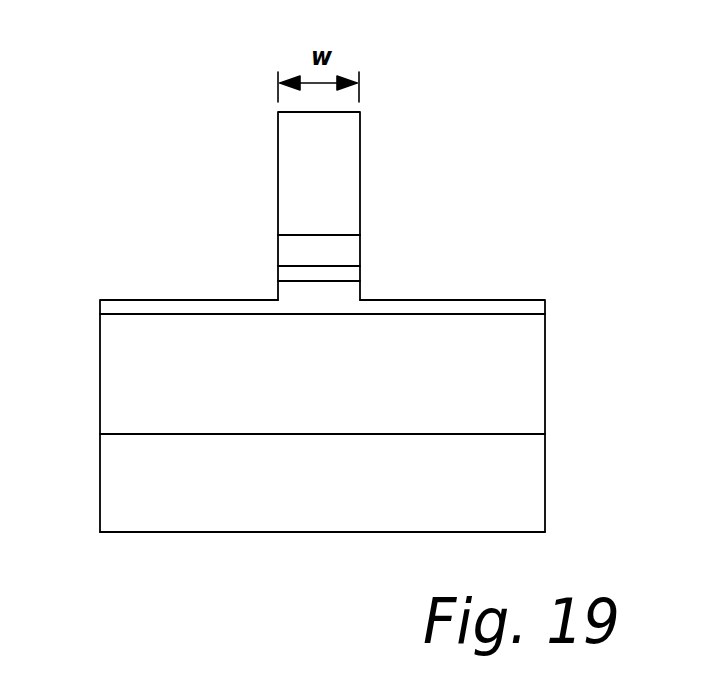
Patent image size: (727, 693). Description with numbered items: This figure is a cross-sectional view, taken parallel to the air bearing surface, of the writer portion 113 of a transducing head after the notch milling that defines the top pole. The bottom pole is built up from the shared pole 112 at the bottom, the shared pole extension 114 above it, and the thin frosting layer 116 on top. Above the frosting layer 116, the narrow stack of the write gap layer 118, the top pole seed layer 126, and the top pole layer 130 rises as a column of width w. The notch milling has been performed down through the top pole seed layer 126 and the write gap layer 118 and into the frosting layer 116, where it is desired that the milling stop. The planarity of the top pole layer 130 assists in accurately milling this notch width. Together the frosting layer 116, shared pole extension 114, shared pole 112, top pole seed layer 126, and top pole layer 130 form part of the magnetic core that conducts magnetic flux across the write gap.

The writer portion 113 is at (212, 568).
The shared pole 112 is at (345, 492).
The shared pole extension 114 is at (340, 392).
The frosting layer 116 is at (255, 308).
The write gap layer 118 is at (343, 275).
The top pole seed layer 126 is at (345, 249).
The top pole layer 130 is at (347, 186).